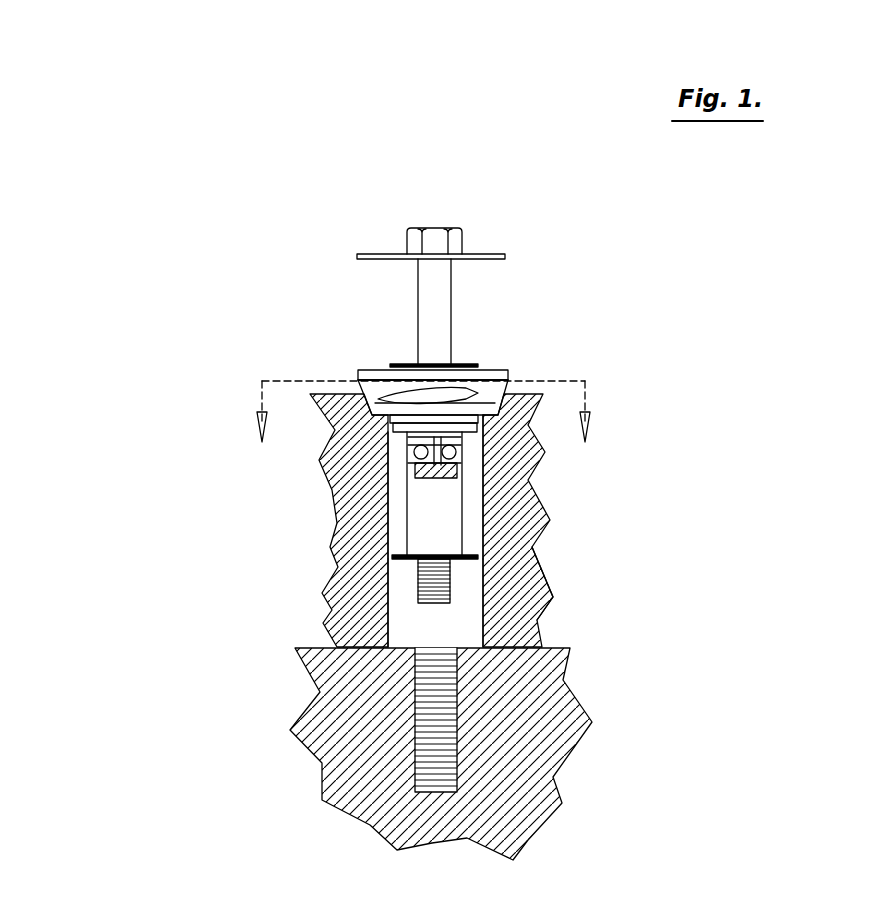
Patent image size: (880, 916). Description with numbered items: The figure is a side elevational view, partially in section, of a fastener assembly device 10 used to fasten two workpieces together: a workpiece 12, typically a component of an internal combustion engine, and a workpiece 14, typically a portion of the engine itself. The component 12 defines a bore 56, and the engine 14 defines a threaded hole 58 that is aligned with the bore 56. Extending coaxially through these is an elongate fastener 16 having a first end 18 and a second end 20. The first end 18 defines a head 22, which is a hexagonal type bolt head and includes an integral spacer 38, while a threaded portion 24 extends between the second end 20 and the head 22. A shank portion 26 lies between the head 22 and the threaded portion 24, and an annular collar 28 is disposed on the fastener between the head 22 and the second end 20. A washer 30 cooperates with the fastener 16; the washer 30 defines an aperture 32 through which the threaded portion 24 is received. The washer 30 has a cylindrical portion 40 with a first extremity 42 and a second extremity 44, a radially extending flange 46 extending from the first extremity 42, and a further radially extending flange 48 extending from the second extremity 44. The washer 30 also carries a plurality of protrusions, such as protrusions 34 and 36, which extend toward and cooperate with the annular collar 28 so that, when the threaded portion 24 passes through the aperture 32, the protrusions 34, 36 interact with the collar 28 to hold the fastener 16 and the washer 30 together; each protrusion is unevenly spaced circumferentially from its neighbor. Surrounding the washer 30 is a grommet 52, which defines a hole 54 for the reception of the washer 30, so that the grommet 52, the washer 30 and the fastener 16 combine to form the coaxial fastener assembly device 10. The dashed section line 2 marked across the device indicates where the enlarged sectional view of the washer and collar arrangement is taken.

The section line 2— 2 is at (424, 429).
The fastener assembly device 10 is at (314, 324).
The workpiece 12 is at (342, 556).
The workpiece 14 is at (363, 755).
The elongate fastener 16 is at (512, 303).
The first end 18 is at (433, 228).
The second end 20 is at (450, 603).
The head 22 is at (432, 247).
The threaded portion 24 is at (388, 592).
The shank portion 26 is at (426, 290).
The annular collar 28 is at (452, 456).
The washer 30 is at (375, 500).
The aperture 32 is at (553, 597).
The protrusion 34 is at (395, 431).
The protrusion 36 is at (473, 428).
The integral spacer 38 is at (493, 254).
The cylindrical portion 40 is at (462, 532).
The first extremity 42 is at (462, 369).
The second extremity 44 is at (418, 557).
The radially extending flange 46 is at (413, 364).
The further radially extending flange 48 is at (420, 577).
The grommet 52 is at (508, 376).
The hole 54 is at (358, 373).
The bore 56 is at (465, 558).
The threaded hole 58 is at (460, 708).